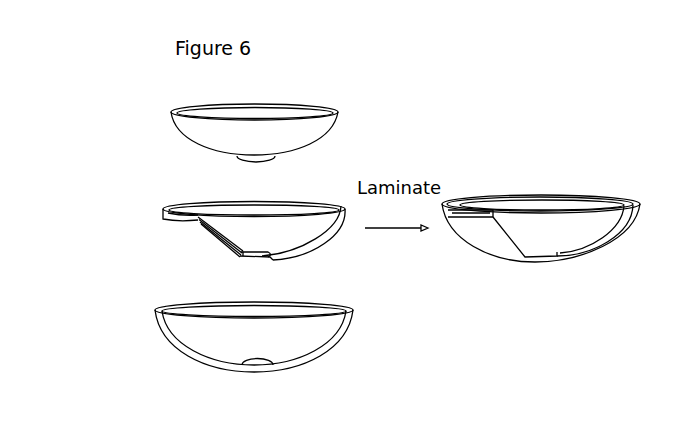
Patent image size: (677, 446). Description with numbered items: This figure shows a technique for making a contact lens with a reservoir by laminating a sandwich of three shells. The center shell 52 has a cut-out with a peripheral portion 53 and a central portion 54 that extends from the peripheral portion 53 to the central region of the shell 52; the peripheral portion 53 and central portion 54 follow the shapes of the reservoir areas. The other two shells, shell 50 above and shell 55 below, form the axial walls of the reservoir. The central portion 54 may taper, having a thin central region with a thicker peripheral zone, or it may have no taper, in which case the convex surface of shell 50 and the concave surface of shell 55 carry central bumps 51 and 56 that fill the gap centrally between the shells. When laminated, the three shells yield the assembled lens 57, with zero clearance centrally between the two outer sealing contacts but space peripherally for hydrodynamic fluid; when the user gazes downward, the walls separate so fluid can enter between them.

The shell 50 is at (254, 129).
The bump 51 is at (291, 160).
The center shell 52 is at (254, 231).
The peripheral portion 53 is at (212, 241).
The central portion 54 is at (256, 271).
The shell 55 is at (254, 337).
The bump 56 is at (279, 372).
The laminated assembly 57 is at (541, 228).